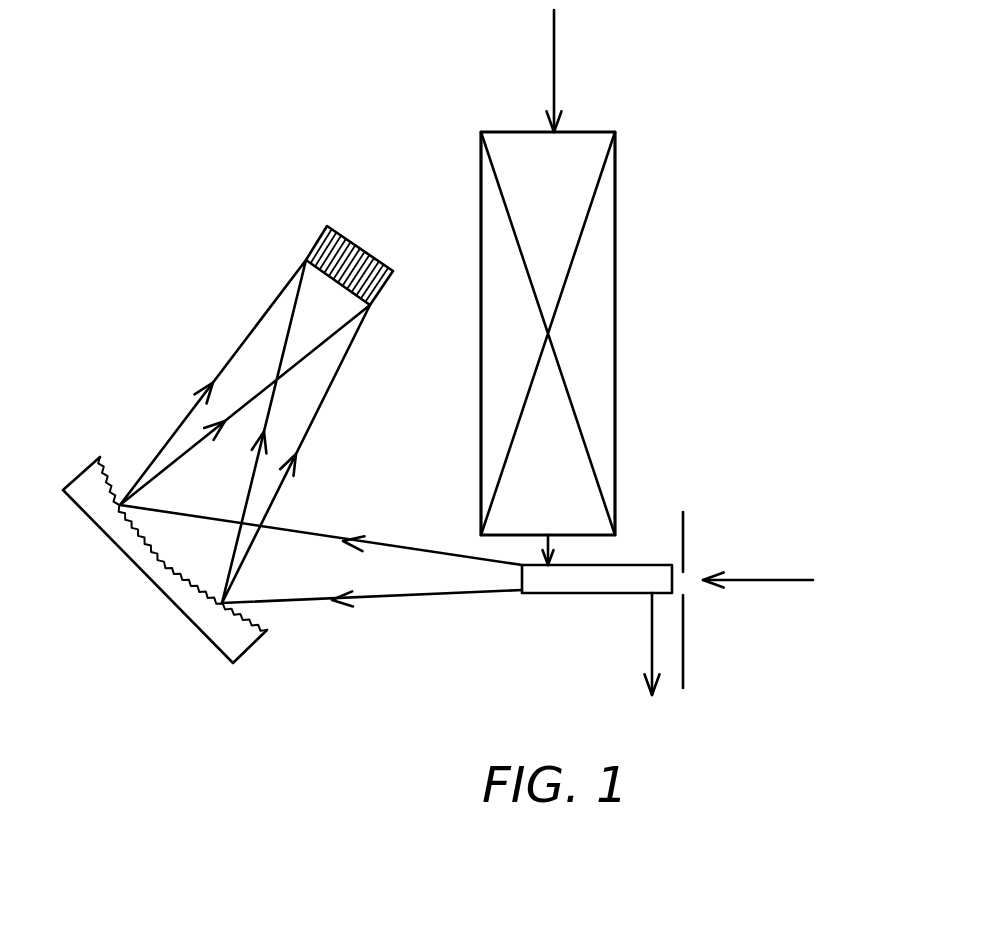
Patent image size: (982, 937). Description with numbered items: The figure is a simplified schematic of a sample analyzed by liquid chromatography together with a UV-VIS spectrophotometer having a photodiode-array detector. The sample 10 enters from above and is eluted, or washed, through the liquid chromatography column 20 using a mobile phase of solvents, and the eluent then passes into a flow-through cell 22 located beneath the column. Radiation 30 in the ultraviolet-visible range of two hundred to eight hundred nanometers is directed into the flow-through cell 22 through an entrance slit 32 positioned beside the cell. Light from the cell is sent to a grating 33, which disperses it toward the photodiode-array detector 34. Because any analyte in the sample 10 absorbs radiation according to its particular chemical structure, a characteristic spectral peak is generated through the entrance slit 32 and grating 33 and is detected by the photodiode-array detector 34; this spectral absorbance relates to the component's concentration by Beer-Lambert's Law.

The sample 10 is at (554, 33).
The liquid chromatography column 20 is at (553, 267).
The flow-through cell 22 is at (563, 593).
The radiation 30 is at (773, 580).
The entrance slit 32 is at (690, 527).
The grating 33 is at (157, 584).
The photodiode-array detector 34 is at (348, 240).